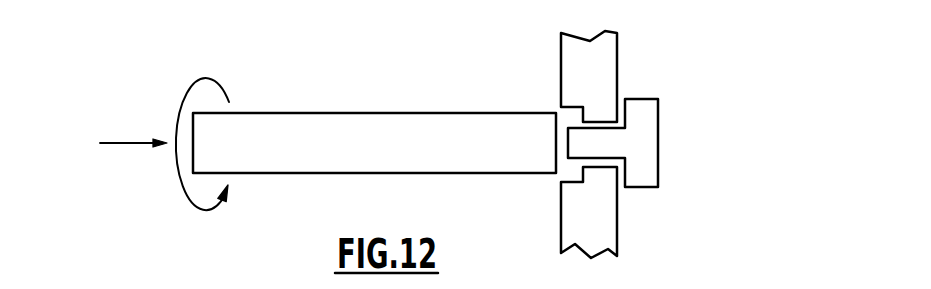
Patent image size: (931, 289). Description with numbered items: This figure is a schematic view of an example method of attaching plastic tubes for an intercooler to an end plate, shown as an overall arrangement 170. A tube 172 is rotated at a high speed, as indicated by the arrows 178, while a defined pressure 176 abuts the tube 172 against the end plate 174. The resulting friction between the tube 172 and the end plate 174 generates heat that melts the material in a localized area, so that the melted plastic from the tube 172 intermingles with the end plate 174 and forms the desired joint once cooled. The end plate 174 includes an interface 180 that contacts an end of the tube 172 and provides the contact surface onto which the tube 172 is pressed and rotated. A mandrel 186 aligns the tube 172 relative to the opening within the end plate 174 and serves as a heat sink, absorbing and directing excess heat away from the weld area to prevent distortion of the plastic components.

The fastening assembly 170 is at (744, 76).
The tube 172 is at (430, 162).
The end plate 174 is at (611, 57).
The defined pressure 176 is at (113, 143).
The arrows 178 is at (182, 222).
The interface 180 is at (561, 177).
The mandrel 186 is at (645, 137).